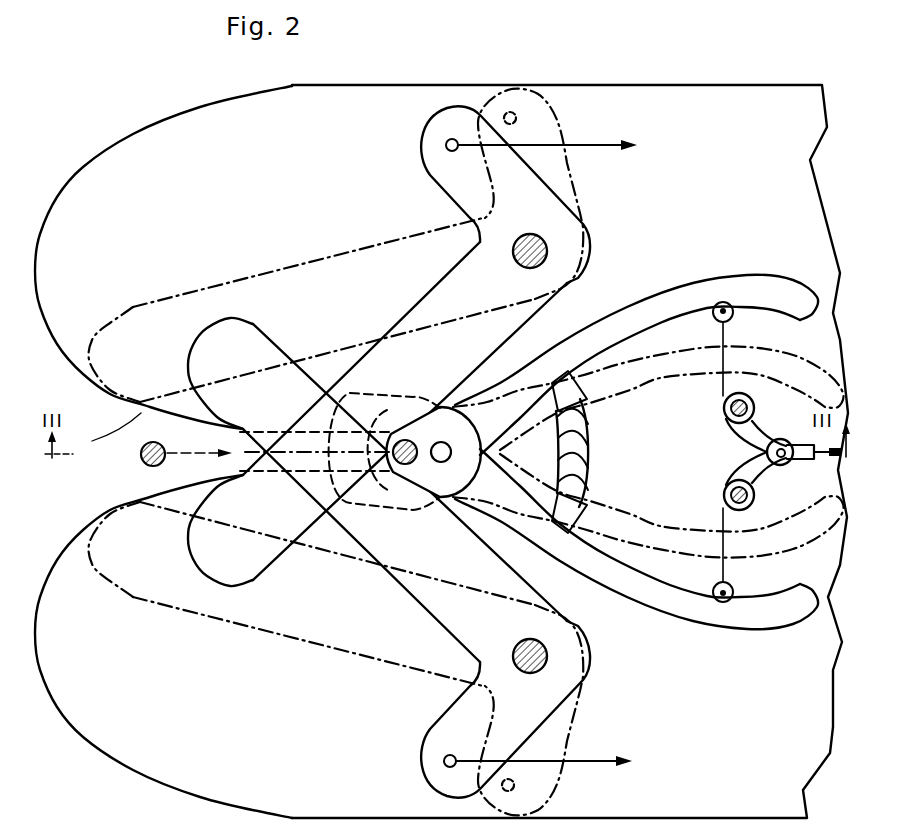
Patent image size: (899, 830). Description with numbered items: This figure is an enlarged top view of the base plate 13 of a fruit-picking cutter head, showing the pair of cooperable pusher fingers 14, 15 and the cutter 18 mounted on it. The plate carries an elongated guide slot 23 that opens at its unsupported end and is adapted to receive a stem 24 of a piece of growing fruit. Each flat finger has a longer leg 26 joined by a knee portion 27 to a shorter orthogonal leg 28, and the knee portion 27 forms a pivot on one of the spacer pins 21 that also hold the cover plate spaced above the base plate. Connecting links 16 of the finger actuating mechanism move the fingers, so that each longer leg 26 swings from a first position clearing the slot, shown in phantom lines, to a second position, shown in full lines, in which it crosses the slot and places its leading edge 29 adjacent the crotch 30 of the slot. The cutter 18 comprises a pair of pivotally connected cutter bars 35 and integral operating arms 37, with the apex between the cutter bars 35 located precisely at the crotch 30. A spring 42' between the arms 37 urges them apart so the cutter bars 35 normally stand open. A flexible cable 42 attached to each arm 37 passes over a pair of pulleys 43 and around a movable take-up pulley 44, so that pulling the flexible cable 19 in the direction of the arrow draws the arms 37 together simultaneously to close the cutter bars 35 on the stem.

The base plate 13 is at (787, 793).
The pusher finger 14 is at (141, 305).
The pusher finger 15 is at (127, 598).
The connecting links 16 is at (580, 150).
The cutter 18 is at (690, 290).
The flexible cable 19 is at (843, 463).
The spacer pins 21 is at (547, 245).
The guide slot 23 is at (102, 434).
The stem 24 is at (140, 462).
The longer leg 26 is at (450, 290).
The knee portion 27 is at (573, 260).
The shorter orthogonal leg 28 is at (523, 197).
The leading edge 29 is at (258, 330).
The crotch 30 is at (391, 432).
The cutter bars 35 is at (371, 392).
The operating arms 37 is at (753, 281).
The flexible cable 42 is at (648, 451).
The spring 42' is at (604, 452).
The pulleys 43 is at (756, 409).
The take-up pulley 44 is at (767, 452).